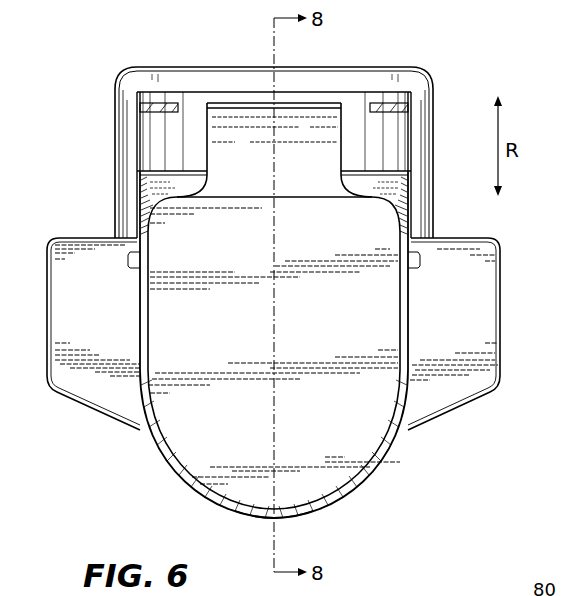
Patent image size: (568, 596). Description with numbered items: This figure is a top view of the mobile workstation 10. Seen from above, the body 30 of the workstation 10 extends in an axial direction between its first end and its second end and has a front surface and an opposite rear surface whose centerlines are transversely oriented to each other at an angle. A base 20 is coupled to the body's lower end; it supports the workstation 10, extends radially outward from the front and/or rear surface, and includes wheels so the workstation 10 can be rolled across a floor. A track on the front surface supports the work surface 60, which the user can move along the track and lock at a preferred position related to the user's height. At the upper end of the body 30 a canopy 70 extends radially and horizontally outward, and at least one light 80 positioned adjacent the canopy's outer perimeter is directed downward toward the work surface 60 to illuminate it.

The mobile workstation 10 is at (68, 449).
The base 20 is at (340, 86).
The body 30 is at (96, 177).
The work surface 60 is at (467, 315).
The canopy 70 is at (213, 429).
The light 80 is at (345, 493).